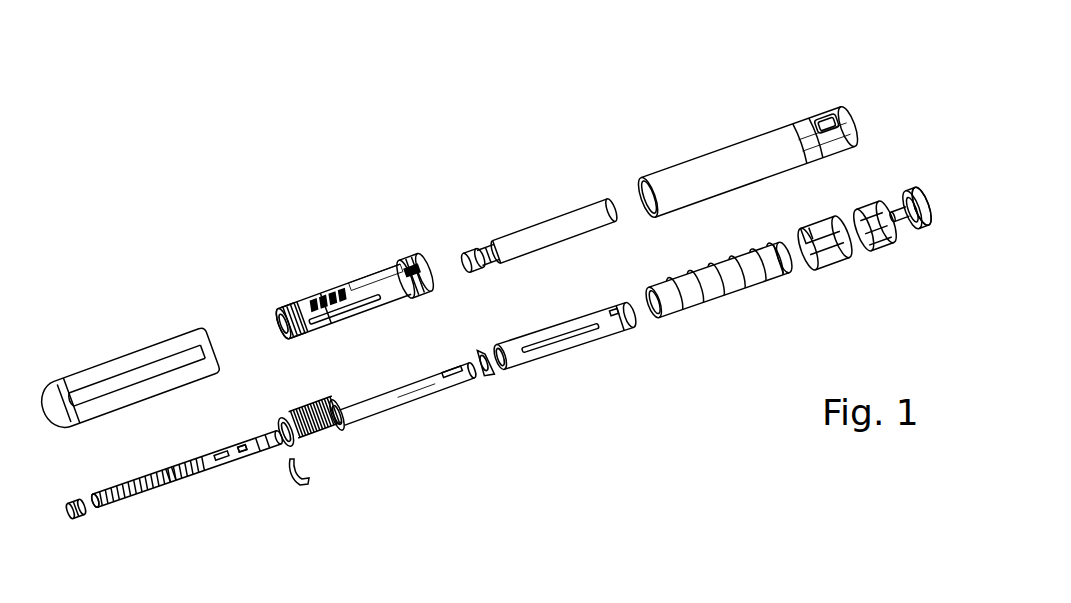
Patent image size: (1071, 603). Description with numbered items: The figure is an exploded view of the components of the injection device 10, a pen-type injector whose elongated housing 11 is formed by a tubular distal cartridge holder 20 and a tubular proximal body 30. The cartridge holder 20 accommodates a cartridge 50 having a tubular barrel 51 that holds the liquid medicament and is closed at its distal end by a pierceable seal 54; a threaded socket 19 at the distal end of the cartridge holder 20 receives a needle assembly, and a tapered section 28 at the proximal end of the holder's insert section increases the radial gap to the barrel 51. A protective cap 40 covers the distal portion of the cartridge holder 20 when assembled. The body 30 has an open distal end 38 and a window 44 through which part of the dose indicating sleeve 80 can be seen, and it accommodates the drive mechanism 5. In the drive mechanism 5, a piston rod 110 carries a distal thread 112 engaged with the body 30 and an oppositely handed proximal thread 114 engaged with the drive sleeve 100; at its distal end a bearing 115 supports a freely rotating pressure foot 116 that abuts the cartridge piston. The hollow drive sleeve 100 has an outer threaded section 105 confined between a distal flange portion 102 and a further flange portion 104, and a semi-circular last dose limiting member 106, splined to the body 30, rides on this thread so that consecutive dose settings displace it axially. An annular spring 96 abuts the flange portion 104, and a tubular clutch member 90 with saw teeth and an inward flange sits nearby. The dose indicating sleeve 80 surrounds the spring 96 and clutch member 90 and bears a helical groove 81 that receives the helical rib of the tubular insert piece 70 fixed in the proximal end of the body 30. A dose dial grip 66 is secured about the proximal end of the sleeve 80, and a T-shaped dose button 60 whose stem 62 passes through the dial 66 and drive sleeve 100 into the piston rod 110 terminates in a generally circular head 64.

The drive mechanism 5 is at (533, 441).
The injection device 10 is at (438, 131).
The housing 11 is at (305, 191).
The threaded socket 19 is at (282, 314).
The cartridge holder 20 is at (343, 268).
The tapered section 28 is at (395, 262).
The body 30 is at (705, 147).
The distal opening of housing 38 is at (656, 177).
The protective cap 40 is at (193, 345).
The window 44 is at (833, 121).
The cartridge 50 is at (546, 236).
The barrel 51 is at (503, 236).
The pierceable seal 54 is at (469, 246).
The dose button 60 is at (910, 185).
The stem 62 is at (898, 216).
The head 64 is at (927, 214).
The dose dial grip 66 is at (867, 197).
The insert piece 70 is at (825, 215).
The dose indicating sleeve 80 is at (710, 292).
The helical groove 81 is at (764, 282).
The clutch member 90 is at (567, 356).
The annular spring 96 is at (488, 386).
The drive sleeve 100 is at (428, 421).
The distal flange portion 102 is at (287, 418).
The flange portion 104 is at (339, 432).
The threaded section 105 is at (310, 405).
The last dose limiting member 106 is at (298, 491).
The piston rod 110 is at (175, 498).
The distal thread 112 is at (178, 472).
The proximal thread 114 is at (251, 456).
The bearing 115 is at (92, 503).
The pressure foot 116 is at (75, 520).